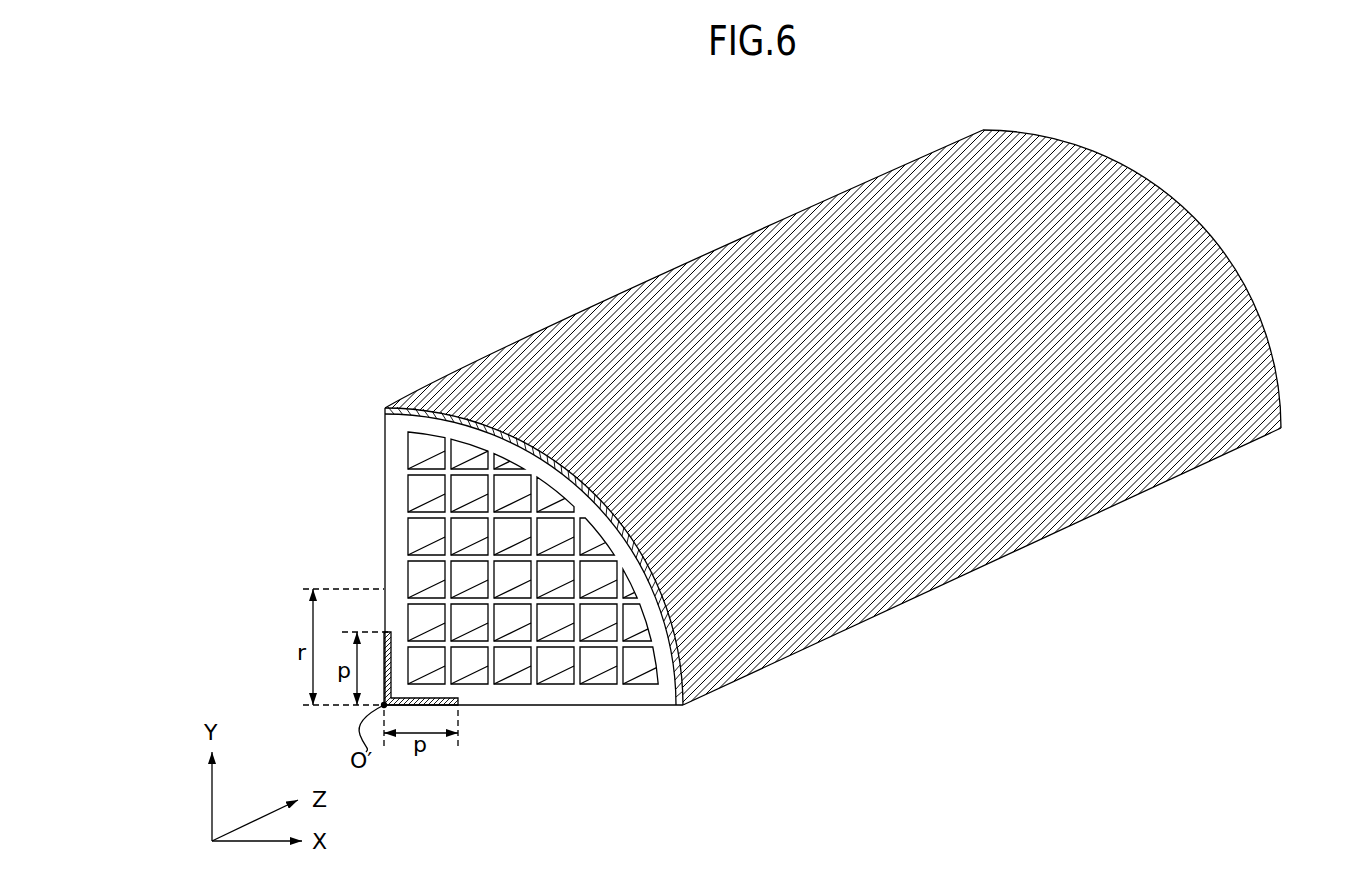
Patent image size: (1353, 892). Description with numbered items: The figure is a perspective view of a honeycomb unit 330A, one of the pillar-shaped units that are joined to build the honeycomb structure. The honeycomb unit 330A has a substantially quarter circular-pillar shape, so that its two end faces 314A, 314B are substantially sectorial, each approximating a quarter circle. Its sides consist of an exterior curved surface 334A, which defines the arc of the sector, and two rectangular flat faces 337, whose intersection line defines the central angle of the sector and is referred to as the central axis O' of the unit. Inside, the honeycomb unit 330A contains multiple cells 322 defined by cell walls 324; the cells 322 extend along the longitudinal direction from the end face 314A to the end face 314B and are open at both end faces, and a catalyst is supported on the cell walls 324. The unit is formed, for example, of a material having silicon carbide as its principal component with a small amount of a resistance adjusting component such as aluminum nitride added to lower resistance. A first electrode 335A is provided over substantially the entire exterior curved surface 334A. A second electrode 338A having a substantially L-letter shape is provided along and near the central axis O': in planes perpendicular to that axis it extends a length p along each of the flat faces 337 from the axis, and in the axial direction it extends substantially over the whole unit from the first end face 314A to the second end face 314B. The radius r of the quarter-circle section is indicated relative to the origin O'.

The honeycomb unit 330A is at (567, 190).
The end face 314A is at (449, 578).
The end face 314B is at (1252, 250).
The rectangular flat face 337 is at (367, 427).
The exterior curved surface 334A is at (418, 432).
The cell 322 is at (432, 498).
The cell wall 324 is at (432, 553).
The first electrode 335A is at (1050, 495).
The second electrode 338A is at (458, 703).